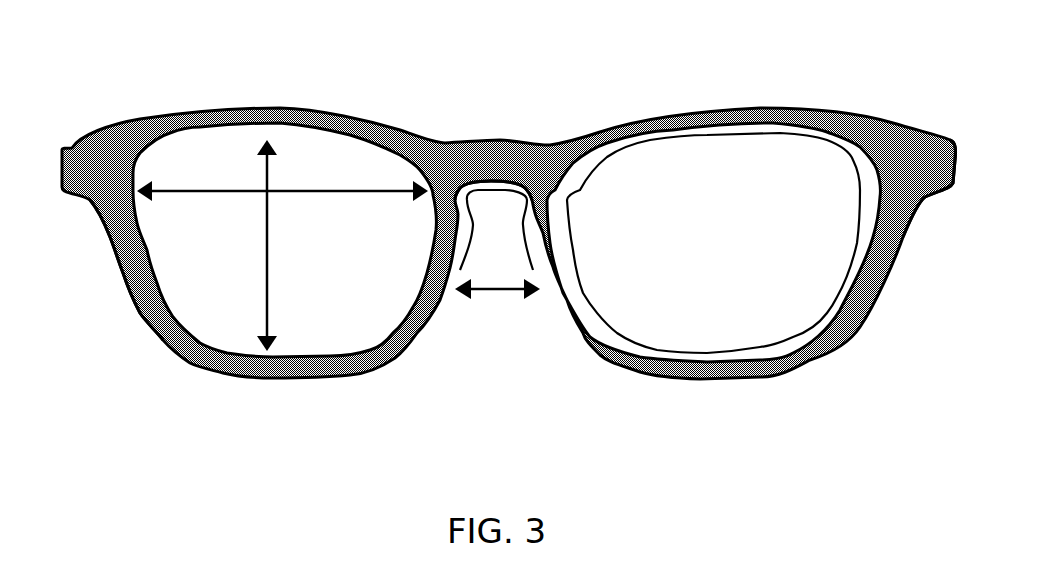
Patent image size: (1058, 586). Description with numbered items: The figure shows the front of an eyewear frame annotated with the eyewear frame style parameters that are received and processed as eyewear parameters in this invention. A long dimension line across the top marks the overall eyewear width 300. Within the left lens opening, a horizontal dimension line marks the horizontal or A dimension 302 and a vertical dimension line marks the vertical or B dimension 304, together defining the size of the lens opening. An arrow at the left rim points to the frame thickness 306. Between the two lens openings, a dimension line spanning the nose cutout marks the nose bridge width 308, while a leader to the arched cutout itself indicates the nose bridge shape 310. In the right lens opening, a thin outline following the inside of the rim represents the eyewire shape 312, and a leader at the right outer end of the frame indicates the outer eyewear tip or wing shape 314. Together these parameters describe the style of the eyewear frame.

The overall eyewear width 300 is at (64, 60).
The horizontal or A dimension 302 is at (318, 193).
The vertical or B dimension 304 is at (265, 300).
The frame thickness 306 is at (98, 266).
The nose bridge width 308 is at (490, 300).
The nose bridge shape 310 is at (490, 182).
The eyewire shape 312 is at (830, 328).
The outer eyewear tip or wing shape 314 is at (937, 207).